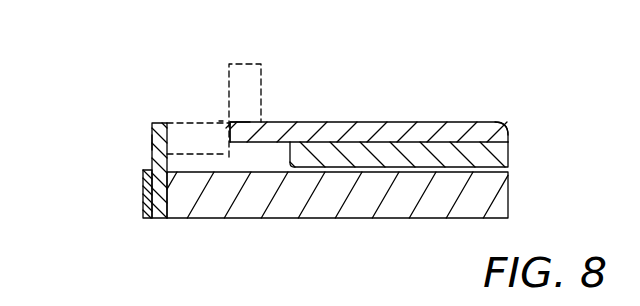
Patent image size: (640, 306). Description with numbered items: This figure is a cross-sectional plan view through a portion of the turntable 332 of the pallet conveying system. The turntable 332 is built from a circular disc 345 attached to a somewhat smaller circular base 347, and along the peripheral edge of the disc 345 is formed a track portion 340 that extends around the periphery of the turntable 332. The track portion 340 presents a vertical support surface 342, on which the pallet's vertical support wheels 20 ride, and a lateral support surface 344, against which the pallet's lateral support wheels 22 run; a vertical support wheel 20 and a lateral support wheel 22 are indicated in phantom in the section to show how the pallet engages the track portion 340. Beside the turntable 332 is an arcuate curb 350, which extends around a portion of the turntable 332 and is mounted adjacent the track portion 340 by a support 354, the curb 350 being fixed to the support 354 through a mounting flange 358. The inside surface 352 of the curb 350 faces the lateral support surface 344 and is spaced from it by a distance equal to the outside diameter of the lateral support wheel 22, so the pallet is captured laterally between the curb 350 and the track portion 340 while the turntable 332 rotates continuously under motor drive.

The vertical support wheel 20 is at (257, 63).
The lateral support wheel 22 is at (235, 154).
The turntable 332 is at (425, 122).
The track portion 340 is at (222, 114).
The vertical support surface 342 is at (246, 121).
The lateral support surface 344 is at (227, 127).
The circular disc 345 is at (496, 122).
The circular base 347 is at (491, 157).
The arcuate curb 350 is at (145, 142).
The inside surface 352 is at (162, 121).
The support 354 is at (277, 221).
The mounting flange 358 is at (142, 192).